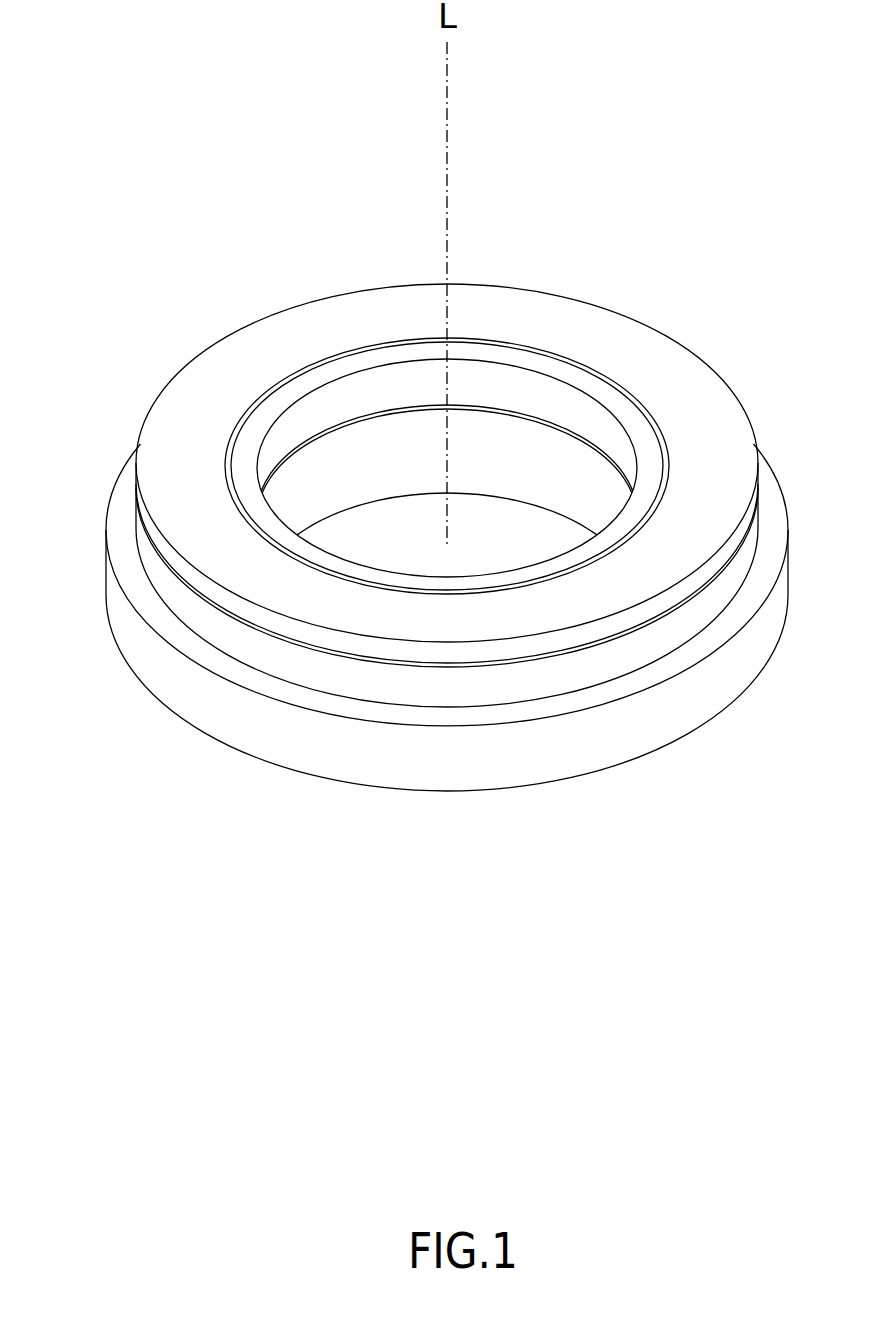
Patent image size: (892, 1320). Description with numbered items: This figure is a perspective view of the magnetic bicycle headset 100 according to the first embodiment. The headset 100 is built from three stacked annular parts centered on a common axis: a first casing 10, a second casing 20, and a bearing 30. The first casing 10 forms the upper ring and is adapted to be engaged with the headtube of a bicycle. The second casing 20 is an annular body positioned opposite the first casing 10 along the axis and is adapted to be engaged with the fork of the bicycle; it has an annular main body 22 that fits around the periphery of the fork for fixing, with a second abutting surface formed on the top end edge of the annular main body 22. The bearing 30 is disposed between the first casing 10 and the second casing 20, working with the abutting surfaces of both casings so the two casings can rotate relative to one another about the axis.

The magnetic bicycle headset 100 is at (434, 469).
The first casing 10 is at (684, 312).
The second casing 20 is at (434, 600).
The annular main body 22 is at (518, 467).
The bearing 30 is at (308, 425).